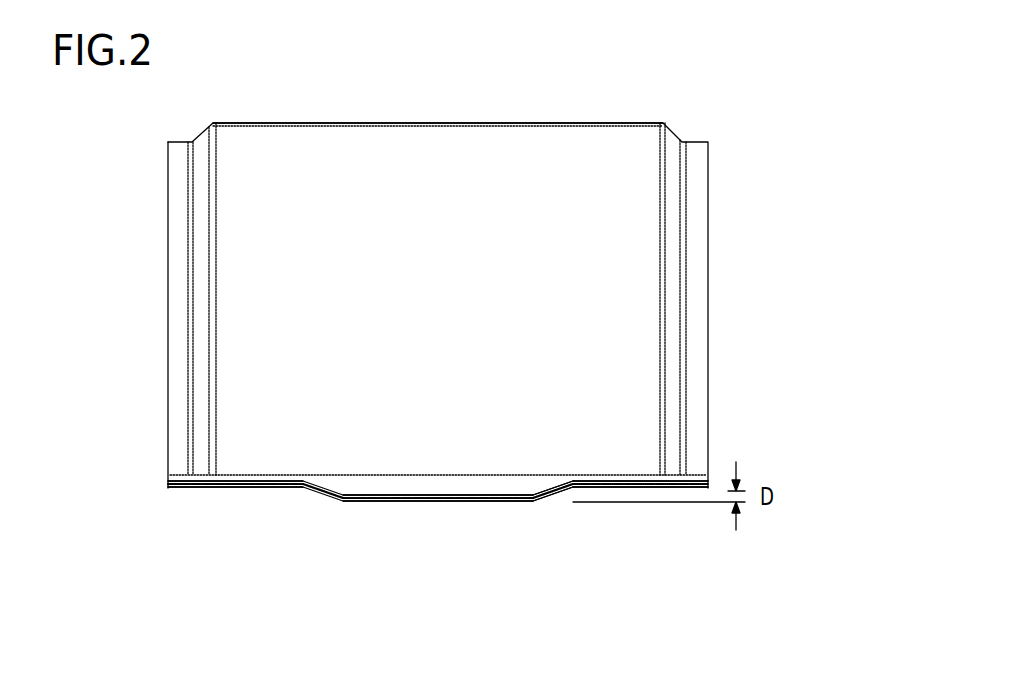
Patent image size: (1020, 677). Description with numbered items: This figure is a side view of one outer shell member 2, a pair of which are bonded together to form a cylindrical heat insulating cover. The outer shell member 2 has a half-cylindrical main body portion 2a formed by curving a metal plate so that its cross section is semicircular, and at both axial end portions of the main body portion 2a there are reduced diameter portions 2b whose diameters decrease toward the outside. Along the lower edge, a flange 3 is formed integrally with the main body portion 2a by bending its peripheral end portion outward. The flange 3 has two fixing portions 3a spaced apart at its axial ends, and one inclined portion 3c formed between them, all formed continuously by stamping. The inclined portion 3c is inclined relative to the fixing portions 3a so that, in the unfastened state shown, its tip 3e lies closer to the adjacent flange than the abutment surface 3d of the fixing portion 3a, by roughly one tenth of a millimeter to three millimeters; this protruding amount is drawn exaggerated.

The outer shell member 2 is at (678, 122).
The main body portion 2a is at (528, 170).
The reduced diameter portion 2b is at (200, 325).
The flange 3 is at (463, 512).
The fixing portion 3a is at (245, 488).
The inclined portion 3c is at (382, 485).
The abutment surface 3d is at (612, 488).
The tip 3e is at (436, 502).